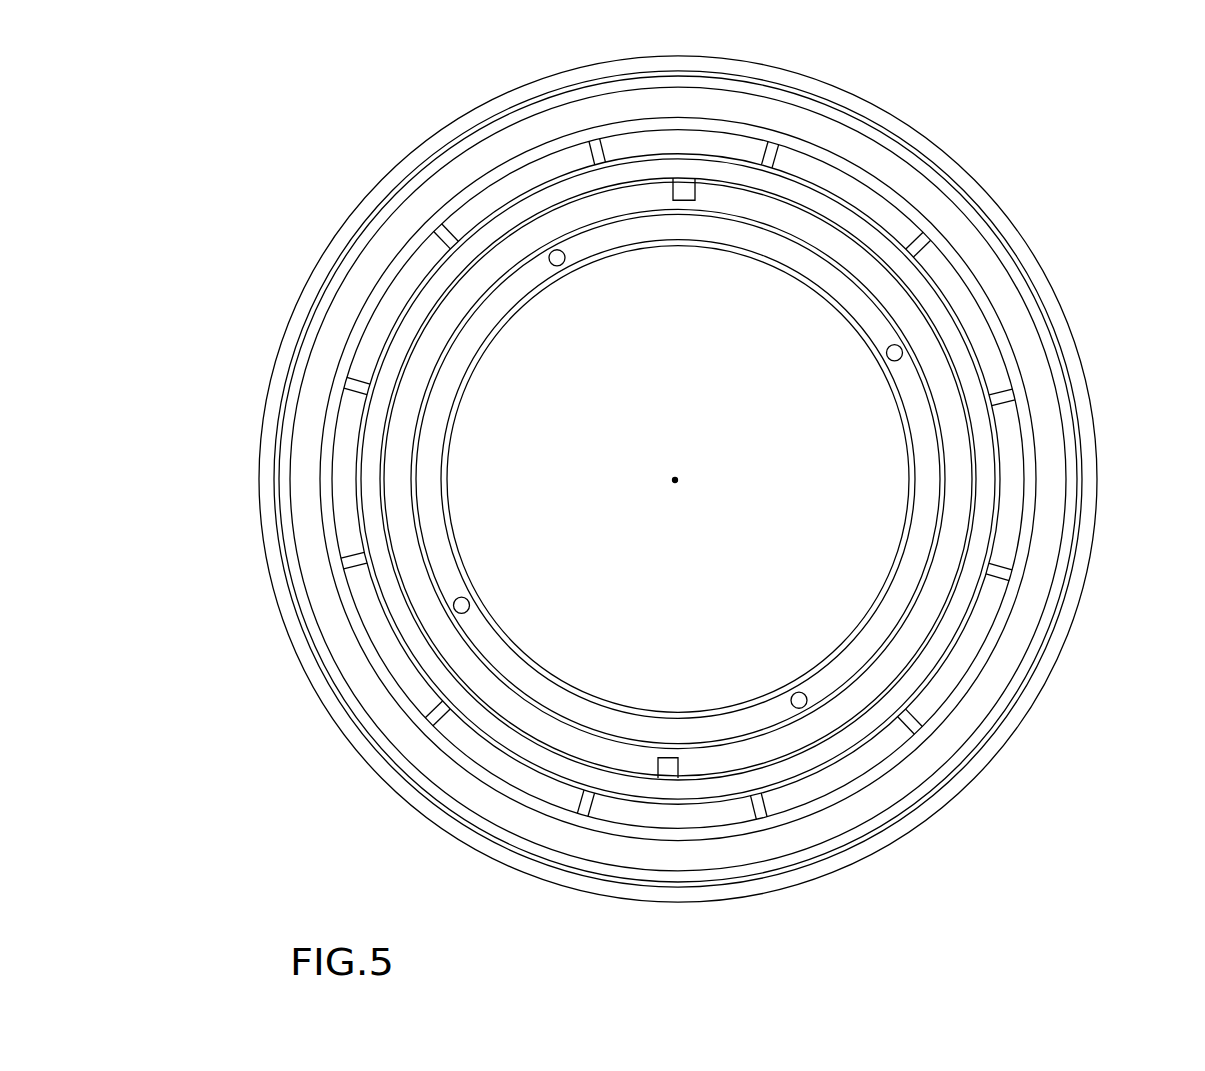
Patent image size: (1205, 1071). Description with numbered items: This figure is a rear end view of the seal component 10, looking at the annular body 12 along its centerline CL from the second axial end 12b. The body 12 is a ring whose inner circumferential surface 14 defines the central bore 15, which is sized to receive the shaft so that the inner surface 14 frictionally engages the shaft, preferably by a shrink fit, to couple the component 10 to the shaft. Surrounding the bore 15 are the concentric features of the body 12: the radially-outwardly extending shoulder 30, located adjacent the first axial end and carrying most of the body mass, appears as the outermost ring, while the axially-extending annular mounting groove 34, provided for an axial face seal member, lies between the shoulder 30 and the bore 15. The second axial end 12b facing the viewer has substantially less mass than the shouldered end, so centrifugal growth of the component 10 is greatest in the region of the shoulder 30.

The seal component 10 is at (240, 182).
The annular body 12 is at (318, 714).
The second axial end 12b is at (908, 554).
The inner circumferential surface 14 is at (558, 670).
The central bore 15 is at (868, 480).
The shoulder 30 is at (1052, 326).
The annular mounting groove 34 is at (342, 492).
The centerline CL is at (676, 478).